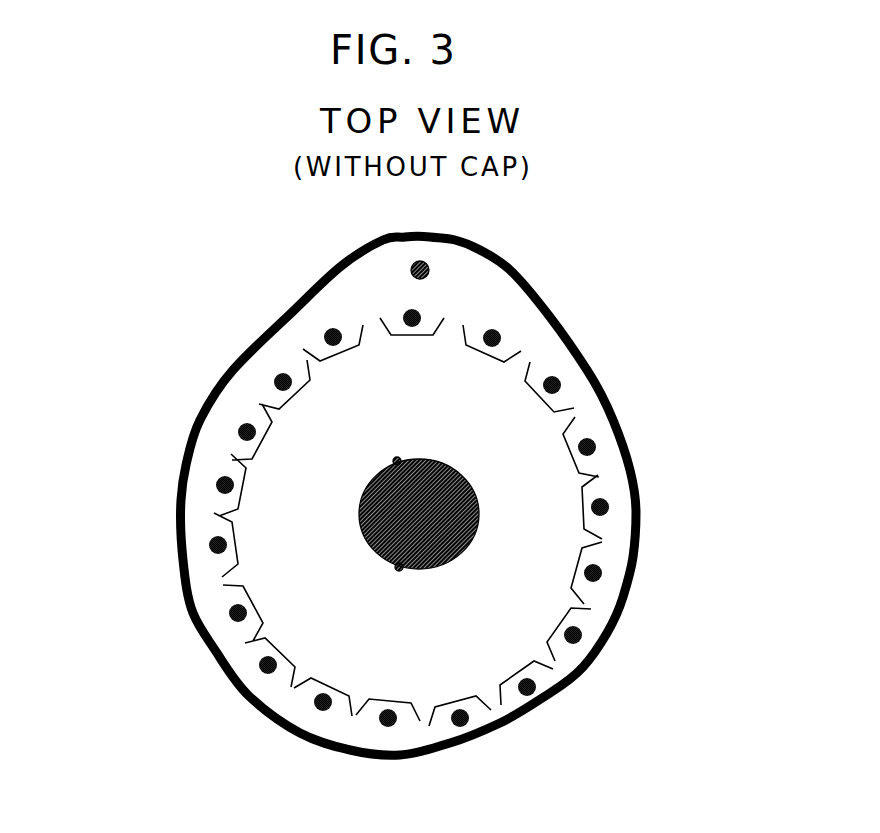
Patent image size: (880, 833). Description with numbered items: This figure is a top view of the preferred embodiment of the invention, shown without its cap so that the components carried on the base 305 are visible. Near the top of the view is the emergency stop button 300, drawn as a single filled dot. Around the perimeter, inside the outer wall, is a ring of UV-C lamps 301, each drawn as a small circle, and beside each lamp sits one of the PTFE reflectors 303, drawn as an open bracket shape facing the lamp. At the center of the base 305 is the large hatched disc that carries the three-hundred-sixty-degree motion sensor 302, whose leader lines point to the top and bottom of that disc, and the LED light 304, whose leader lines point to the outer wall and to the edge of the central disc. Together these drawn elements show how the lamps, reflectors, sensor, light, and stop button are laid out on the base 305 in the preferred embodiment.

The emergency stop button 300 is at (430, 270).
The UV-C lamps 301 is at (272, 378).
The 360-degree motion sensor 302 is at (400, 568).
The PTFE reflectors 303 is at (573, 429).
The LED light 304 is at (478, 517).
The base 305 is at (443, 620).